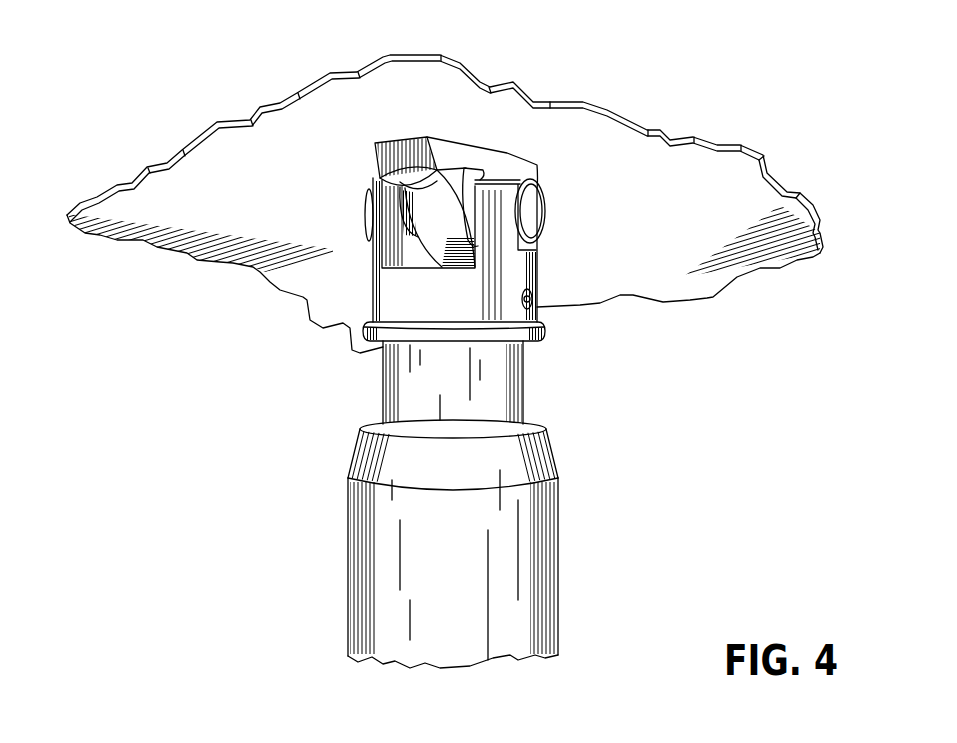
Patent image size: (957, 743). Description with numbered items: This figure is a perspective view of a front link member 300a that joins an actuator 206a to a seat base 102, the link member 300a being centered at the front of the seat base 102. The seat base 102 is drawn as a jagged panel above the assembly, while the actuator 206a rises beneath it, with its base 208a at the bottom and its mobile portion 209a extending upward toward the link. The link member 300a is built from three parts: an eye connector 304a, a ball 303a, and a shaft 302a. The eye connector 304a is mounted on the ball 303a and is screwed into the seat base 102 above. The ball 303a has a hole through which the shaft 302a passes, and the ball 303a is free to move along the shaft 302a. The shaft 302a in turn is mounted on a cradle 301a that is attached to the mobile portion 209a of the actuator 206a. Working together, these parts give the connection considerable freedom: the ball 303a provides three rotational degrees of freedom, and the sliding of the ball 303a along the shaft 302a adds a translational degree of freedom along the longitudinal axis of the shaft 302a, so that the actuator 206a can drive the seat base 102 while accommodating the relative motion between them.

The seat base 102 is at (652, 160).
The actuator 206a is at (561, 495).
The base 208a is at (547, 556).
The mobile portion 209a is at (526, 363).
The link member 300a is at (409, 229).
The cradle 301a is at (379, 291).
The shaft 302a is at (533, 212).
The ball 303a is at (478, 171).
The eye connector 304a is at (423, 137).